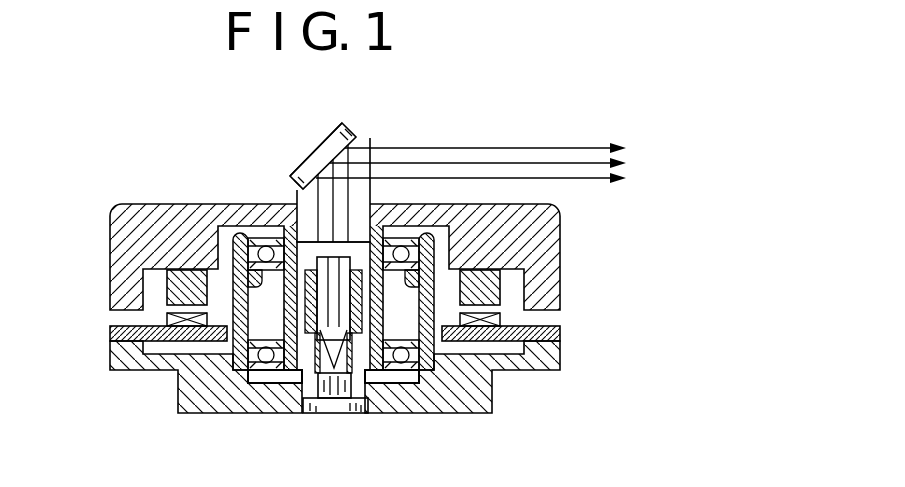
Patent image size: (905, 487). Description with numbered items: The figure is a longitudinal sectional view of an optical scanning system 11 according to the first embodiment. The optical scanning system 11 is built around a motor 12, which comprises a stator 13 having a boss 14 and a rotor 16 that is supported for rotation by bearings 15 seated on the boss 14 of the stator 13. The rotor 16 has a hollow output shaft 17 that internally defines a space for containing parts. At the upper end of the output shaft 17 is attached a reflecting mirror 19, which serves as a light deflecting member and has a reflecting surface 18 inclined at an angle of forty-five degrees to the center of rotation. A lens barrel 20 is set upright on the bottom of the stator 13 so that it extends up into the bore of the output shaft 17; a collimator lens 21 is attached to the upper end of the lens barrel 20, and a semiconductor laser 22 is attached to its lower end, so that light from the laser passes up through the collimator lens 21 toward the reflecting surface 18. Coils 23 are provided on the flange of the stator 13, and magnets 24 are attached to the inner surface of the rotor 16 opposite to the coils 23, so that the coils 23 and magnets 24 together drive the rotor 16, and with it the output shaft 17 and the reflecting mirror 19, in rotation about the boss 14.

The optical scanning system 11 is at (501, 125).
The motor 12 is at (376, 338).
The stator 13 is at (513, 372).
The boss 14 is at (430, 360).
The bearings 15 is at (236, 207).
The rotor 16 is at (545, 227).
The hollow output shaft 17 is at (289, 205).
The reflecting surface 18 is at (364, 138).
The reflecting mirror 19 is at (312, 153).
The lens barrel 20 is at (303, 350).
The collimator lens 21 is at (334, 385).
The semiconductor laser 22 is at (348, 412).
The coils 23 is at (173, 319).
The magnets 24 is at (172, 288).